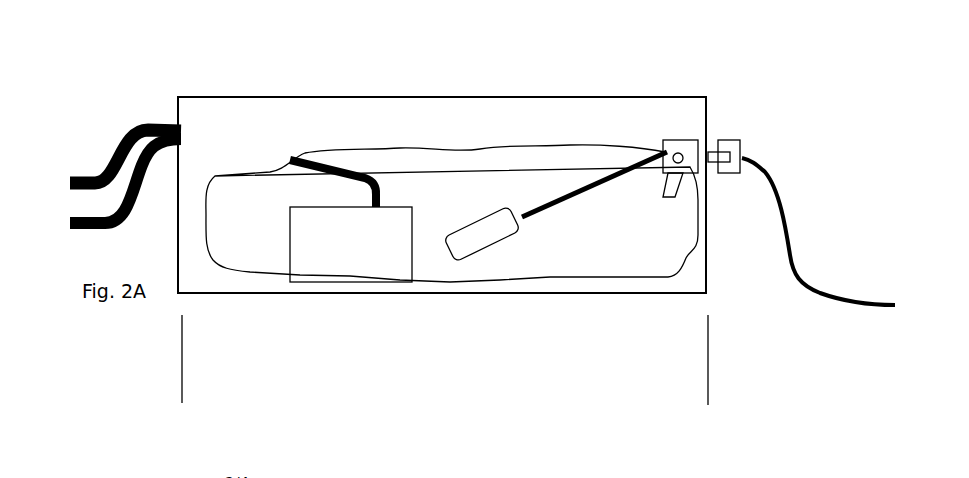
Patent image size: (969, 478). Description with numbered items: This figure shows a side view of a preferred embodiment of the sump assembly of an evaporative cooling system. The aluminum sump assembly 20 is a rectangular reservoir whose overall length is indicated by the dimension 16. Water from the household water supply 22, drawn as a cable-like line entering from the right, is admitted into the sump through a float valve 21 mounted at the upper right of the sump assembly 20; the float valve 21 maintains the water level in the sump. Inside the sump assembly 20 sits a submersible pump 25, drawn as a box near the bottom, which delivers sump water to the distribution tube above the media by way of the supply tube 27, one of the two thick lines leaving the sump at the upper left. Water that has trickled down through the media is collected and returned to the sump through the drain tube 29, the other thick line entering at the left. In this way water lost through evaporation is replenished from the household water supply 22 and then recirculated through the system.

The length of housing 16 is at (695, 393).
The aluminum sump assembly 20 is at (555, 91).
The float valve 21 is at (686, 126).
The household water supply 22 is at (777, 155).
The submersible pump 25 is at (342, 262).
The supply tube 27 is at (98, 201).
The drain tube 29 is at (128, 117).